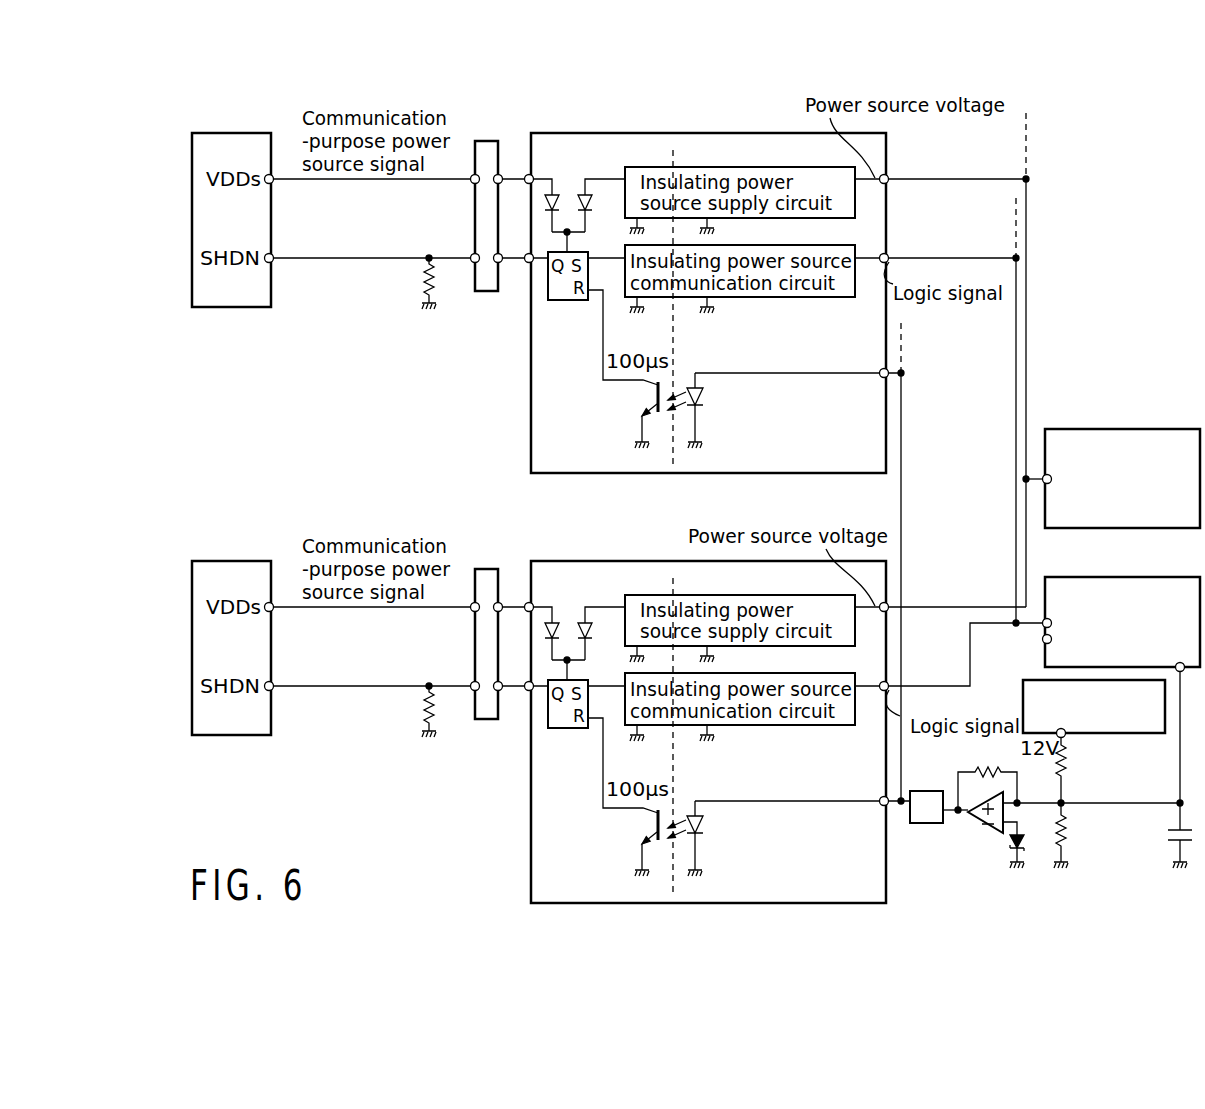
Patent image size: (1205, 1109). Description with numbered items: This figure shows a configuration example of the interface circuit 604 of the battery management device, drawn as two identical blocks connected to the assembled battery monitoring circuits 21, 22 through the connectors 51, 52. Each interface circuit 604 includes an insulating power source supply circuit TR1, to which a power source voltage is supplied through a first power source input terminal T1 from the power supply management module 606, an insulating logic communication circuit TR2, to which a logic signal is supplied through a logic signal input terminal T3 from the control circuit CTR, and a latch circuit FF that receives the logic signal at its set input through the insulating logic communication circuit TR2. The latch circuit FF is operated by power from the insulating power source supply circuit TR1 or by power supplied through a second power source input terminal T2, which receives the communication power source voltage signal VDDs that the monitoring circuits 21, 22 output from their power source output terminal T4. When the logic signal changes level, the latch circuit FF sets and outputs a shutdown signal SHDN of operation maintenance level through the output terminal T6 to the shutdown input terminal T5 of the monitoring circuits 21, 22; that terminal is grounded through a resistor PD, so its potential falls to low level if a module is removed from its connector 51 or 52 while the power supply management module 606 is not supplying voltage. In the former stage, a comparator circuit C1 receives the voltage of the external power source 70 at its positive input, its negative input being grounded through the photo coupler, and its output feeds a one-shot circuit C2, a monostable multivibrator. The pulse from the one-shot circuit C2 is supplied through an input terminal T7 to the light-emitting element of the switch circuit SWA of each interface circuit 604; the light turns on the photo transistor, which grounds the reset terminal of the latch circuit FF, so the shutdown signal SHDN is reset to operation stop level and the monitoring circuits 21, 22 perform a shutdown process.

The assembled battery monitoring circuit 21 is at (228, 561).
The assembled battery monitoring circuit 22 is at (228, 133).
The connector 51 is at (486, 569).
The connector 52 is at (486, 141).
The interface circuit 604 is at (740, 133).
The power supply management module 606 is at (1100, 429).
The external power source 70 is at (1095, 735).
The first power source input terminal T1 is at (889, 176).
The second power source input terminal T2 is at (529, 175).
The logic signal input terminal T3 is at (889, 255).
The power source output terminal T4 is at (272, 175).
The shutdown input terminal T5 is at (272, 262).
The output terminal T6 is at (529, 262).
The input terminal T7 is at (889, 378).
The resistor PD is at (432, 282).
The latch circuit FF is at (566, 300).
The insulating power source supply circuit TR1 is at (625, 170).
The insulating logic communication circuit TR2 is at (835, 297).
The switch circuit SWA is at (677, 385).
The comparator circuit C1 is at (978, 833).
The one-shot circuit C2 is at (927, 823).
The control circuit CTR is at (1062, 577).